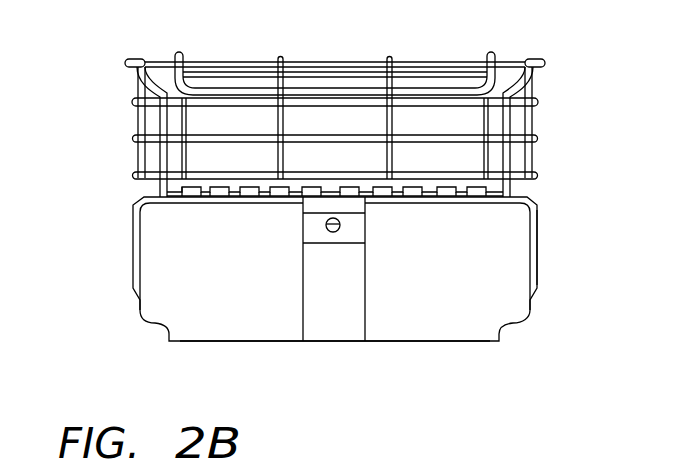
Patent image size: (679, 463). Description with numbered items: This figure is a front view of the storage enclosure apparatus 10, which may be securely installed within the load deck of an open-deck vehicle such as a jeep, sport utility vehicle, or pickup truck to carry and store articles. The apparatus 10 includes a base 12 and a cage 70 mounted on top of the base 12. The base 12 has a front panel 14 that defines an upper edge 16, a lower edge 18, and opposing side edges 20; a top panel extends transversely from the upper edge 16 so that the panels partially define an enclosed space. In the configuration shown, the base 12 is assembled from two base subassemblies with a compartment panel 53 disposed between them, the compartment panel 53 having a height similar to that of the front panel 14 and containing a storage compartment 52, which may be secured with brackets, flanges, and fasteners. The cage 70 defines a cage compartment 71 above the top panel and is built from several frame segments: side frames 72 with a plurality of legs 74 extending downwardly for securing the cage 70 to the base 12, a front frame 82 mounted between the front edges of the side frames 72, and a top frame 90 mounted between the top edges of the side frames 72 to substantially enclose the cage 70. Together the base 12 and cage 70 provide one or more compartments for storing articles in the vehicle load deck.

The storage enclosure apparatus 10 is at (340, 295).
The base 12 is at (118, 267).
The front panel 14 is at (199, 343).
The upper edge 16 is at (128, 202).
The lower edge 18 is at (268, 343).
The side edges 20 is at (537, 278).
The storage compartment 52 is at (320, 243).
The compartment panel 53 is at (362, 315).
The cage 70 is at (351, 99).
The cage compartment 71 is at (200, 120).
The side frames 72 is at (155, 86).
The legs 74 is at (136, 195).
The front frame 82 is at (423, 100).
The top frame 90 is at (258, 88).